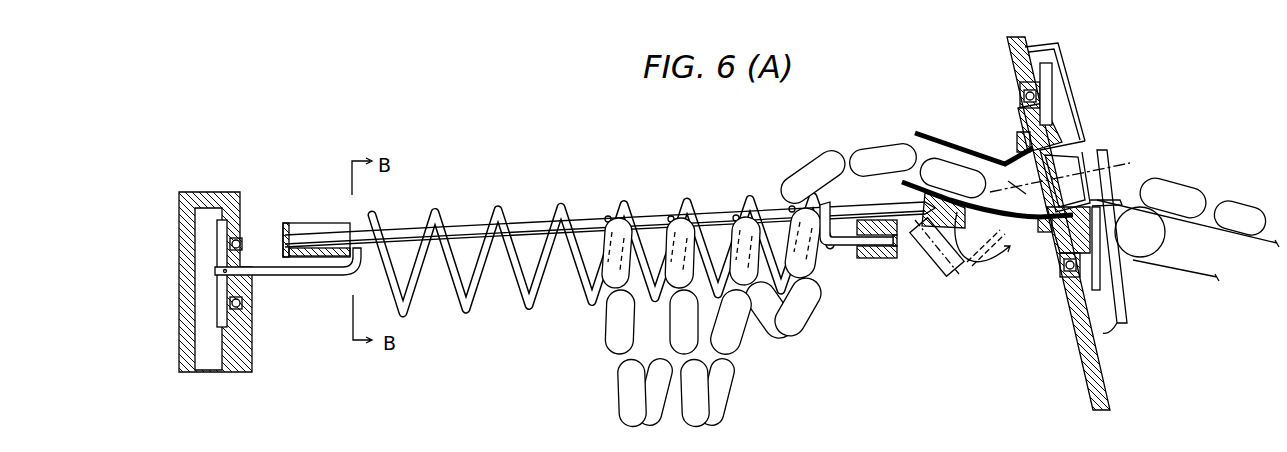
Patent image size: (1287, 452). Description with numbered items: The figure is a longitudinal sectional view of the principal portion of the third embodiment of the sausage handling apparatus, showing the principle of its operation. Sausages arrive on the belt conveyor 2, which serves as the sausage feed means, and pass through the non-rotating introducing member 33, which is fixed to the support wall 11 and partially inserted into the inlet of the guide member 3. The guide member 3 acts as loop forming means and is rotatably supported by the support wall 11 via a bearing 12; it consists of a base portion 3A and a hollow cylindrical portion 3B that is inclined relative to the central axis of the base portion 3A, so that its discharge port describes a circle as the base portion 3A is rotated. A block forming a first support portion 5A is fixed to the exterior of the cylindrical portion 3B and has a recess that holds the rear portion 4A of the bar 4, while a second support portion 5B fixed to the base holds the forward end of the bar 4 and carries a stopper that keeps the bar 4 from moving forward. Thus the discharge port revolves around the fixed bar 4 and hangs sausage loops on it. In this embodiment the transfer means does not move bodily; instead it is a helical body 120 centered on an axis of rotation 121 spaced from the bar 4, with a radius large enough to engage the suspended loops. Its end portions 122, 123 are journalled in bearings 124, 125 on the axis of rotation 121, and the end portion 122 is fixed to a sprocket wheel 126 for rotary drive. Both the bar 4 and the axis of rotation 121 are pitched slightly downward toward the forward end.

The belt conveyor 2 is at (1207, 273).
The guide member 3 is at (982, 52).
The base portion 3A is at (1015, 120).
The hollow cylindrical portion 3B is at (935, 135).
The bar 4 is at (407, 232).
The rear portion of bar 4A is at (892, 203).
The first support portion 5A is at (958, 268).
The second support portion 5B is at (284, 257).
The support wall 11 is at (1083, 352).
The bearing 12 is at (1060, 268).
The introducing member 33 is at (1088, 125).
The helical body 120 is at (440, 222).
The axis of rotation 121 is at (217, 275).
The end portion of helical body 122 is at (281, 272).
The end portion of helical body 123 is at (850, 240).
The bearing 124 is at (244, 241).
The bearing 125 is at (887, 257).
The sprocket wheel 126 is at (215, 310).